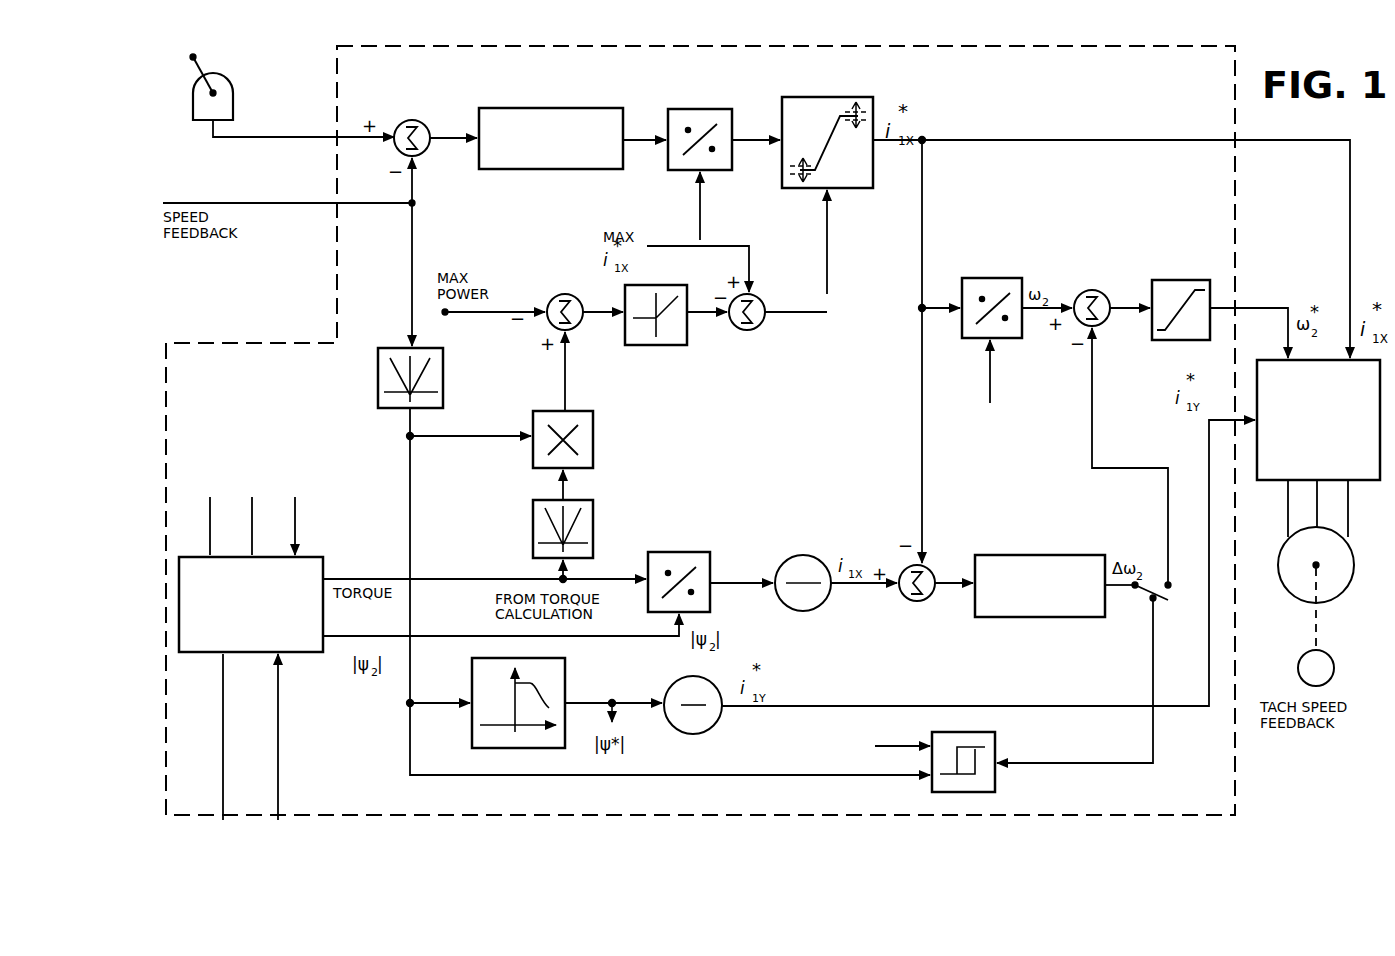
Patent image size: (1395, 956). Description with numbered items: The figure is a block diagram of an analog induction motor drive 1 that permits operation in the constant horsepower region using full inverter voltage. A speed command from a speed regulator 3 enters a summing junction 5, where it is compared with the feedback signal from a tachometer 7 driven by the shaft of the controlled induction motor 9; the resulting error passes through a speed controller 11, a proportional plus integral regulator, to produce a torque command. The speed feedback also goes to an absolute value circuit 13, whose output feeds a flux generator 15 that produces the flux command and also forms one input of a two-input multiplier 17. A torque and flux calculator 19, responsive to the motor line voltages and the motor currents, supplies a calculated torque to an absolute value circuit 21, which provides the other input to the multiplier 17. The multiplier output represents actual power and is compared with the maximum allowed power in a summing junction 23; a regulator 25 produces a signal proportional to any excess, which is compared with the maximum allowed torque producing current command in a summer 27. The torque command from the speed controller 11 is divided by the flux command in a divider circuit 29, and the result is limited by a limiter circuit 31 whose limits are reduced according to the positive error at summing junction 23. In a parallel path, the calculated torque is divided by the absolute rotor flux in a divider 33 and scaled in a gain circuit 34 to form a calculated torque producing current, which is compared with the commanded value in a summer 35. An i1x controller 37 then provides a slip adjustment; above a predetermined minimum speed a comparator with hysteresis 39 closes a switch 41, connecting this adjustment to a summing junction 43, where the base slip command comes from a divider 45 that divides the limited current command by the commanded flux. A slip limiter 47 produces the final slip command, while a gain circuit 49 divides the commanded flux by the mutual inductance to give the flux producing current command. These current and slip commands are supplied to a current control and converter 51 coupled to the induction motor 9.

The control system 1 is at (287, 340).
The speed regulator 3 is at (238, 92).
The summing junction 5 is at (414, 122).
The tachometer 7 is at (1336, 672).
The induction motor 9 is at (1352, 583).
The speed controller 11 is at (600, 108).
The absolute value circuit 13 is at (443, 370).
The flux generator 15 is at (566, 690).
The multiplier 17 is at (596, 428).
The torque and flux calculator 19 is at (325, 557).
The absolute value circuit 21 is at (594, 520).
The summing junction 23 is at (586, 300).
The regulator 25 is at (660, 346).
The summer 27 is at (760, 330).
The divider circuit 29 is at (712, 110).
The limiter circuit 31 is at (790, 97).
The divider 33 is at (698, 552).
The gain circuit 34 is at (812, 556).
The summer 35 is at (920, 601).
The i1x controller 37 is at (1056, 554).
The comparator with hysteresis 39 is at (997, 746).
The switch 41 is at (1170, 604).
The summing junction 43 is at (1098, 290).
The divider 45 is at (1004, 278).
The slip limiter 47 is at (1170, 280).
The gain circuit 49 is at (714, 731).
The current control and converter 51 is at (1372, 484).